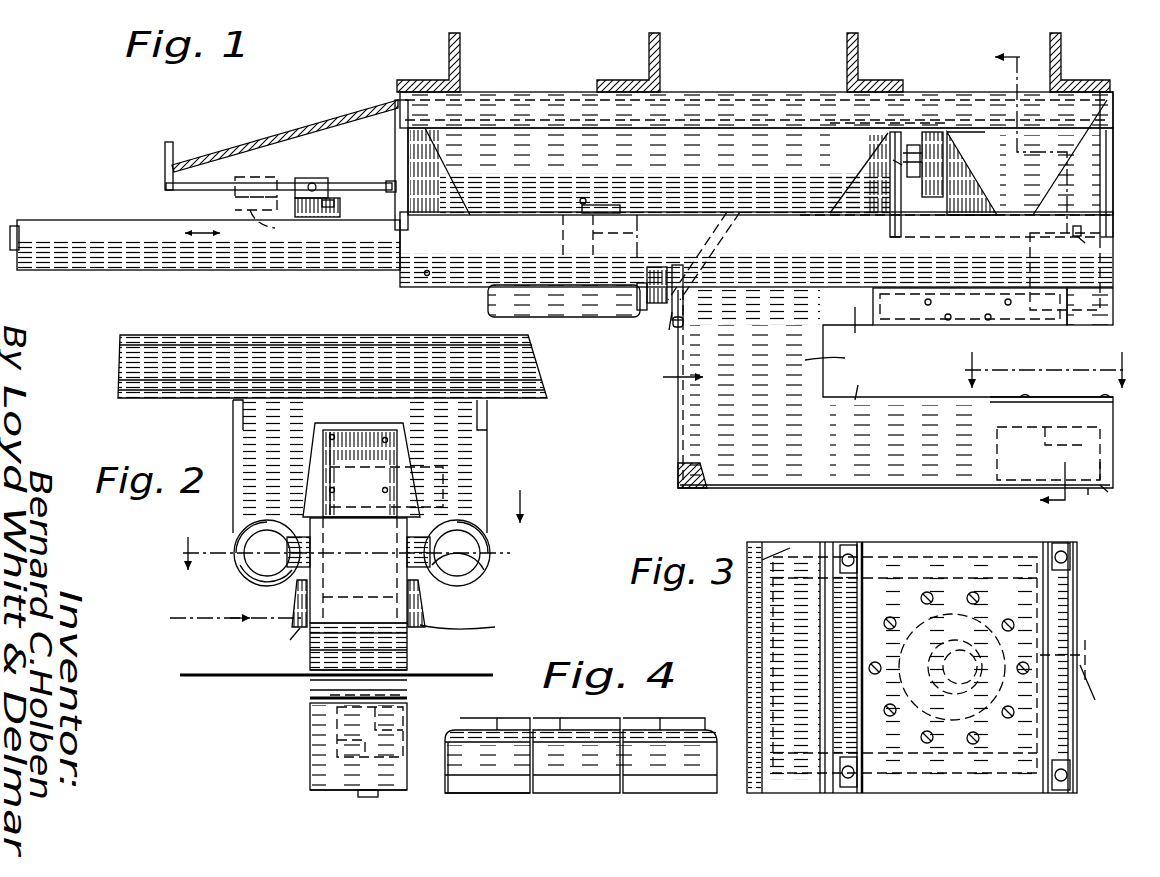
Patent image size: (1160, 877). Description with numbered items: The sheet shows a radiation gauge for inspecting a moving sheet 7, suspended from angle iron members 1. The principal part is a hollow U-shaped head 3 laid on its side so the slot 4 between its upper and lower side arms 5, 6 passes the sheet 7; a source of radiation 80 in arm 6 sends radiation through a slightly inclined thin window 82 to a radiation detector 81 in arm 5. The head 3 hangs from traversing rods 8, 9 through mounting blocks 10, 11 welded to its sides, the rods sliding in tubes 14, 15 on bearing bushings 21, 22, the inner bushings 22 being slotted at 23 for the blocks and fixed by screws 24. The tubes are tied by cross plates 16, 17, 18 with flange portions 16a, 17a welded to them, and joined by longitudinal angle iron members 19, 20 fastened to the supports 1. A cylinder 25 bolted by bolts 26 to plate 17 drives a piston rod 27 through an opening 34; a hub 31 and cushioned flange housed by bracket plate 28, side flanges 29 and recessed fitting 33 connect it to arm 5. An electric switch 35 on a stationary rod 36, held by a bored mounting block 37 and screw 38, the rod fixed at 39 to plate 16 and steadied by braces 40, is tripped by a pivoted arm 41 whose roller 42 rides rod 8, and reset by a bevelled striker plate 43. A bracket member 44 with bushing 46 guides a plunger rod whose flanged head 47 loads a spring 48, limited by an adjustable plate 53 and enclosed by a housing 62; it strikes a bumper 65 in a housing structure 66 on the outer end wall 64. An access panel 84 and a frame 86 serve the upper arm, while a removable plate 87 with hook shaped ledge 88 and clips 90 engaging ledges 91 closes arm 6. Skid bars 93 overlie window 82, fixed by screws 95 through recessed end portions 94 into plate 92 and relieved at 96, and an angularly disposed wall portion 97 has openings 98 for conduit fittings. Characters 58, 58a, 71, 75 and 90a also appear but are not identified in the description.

In FIG. 1, the angle iron members 1 is at (1081, 50).
In FIG. 2, the angle iron members 1 is at (318, 330).
In FIG. 1, the U-shaped frame or head 3 is at (894, 370).
In FIG. 2, the U-shaped frame or head 3 is at (400, 655).
In FIG. 3, the U-shaped frame or head 3 is at (776, 536).
In FIG. 1, the slot 4 is at (813, 360).
In FIG. 2, the slot 4 is at (407, 640).
In FIG. 1, the upper side arm 5 is at (854, 330).
In FIG. 2, the upper side arm 5 is at (358, 570).
In FIG. 1, the lower side arm 6 is at (852, 385).
In FIG. 2, the lower side arm 6 is at (330, 760).
In FIG. 3, the lower side arm 6 is at (748, 625).
In FIG. 4, the lower side arm 6 is at (447, 790).
In FIG. 1, the sheet 7 is at (1030, 277).
In FIG. 2, the sheet 7 is at (215, 690).
In FIG. 1, the traversing rod 8 is at (270, 260).
In FIG. 2, the traversing rod 8 is at (245, 563).
In FIG. 2, the traversing rod 9 is at (480, 568).
In FIG. 1, the mounting block 10 is at (1032, 193).
In FIG. 2, the mounting block 10 is at (310, 543).
In FIG. 2, the mounting block 11 is at (407, 543).
In FIG. 1, the tube 14 is at (470, 275).
In FIG. 2, the tube 14 is at (252, 580).
In FIG. 2, the tube 15 is at (484, 568).
In FIG. 1, the cross plate 16 is at (395, 128).
In FIG. 1, the flange portion 16a is at (1050, 170).
In FIG. 1, the cross plate 17 is at (890, 232).
In FIG. 2, the cross plate 17 is at (310, 480).
In FIG. 1, the flange portion 17a is at (830, 178).
In FIG. 1, the cross plate 18 is at (1113, 185).
In FIG. 2, the cross plate 18 is at (470, 457).
In FIG. 1, the angle iron member 19 is at (740, 95).
In FIG. 2, the angle iron member 19 is at (233, 418).
In FIG. 2, the angle iron member 20 is at (487, 418).
In FIG. 1, the bearing bushing 21 is at (1087, 245).
In FIG. 2, the bearing bushing 22 is at (505, 608).
In FIG. 2, the slot 23 is at (445, 605).
In FIG. 1, the screws 24 is at (427, 276).
In FIG. 1, the cylinder 25 is at (760, 171).
In FIG. 1, the bolts 26 is at (860, 150).
In FIG. 1, the piston rod 27 is at (912, 145).
In FIG. 1, the bracket plate 28 is at (950, 132).
In FIG. 2, the bracket plate 28 is at (360, 473).
In FIG. 1, the side flanges 29 is at (965, 170).
In FIG. 2, the side flanges 29 is at (397, 447).
In FIG. 1, the hub 31 is at (918, 158).
In FIG. 1, the recessed fitting 33 is at (940, 185).
In FIG. 1, the opening 34 is at (900, 180).
In FIG. 1, the electric switch 35 is at (267, 210).
In FIG. 1, the stationary rod 36 is at (352, 184).
In FIG. 1, the mounting block 37 is at (298, 178).
In FIG. 1, the screw 38 is at (312, 183).
In FIG. 1, the fixed rod mounting 39 is at (392, 193).
In FIG. 1, the braces 40 is at (240, 148).
In FIG. 1, the pivoted arm 41 is at (330, 208).
In FIG. 1, the roller 42 is at (315, 217).
In FIG. 1, the bevelled striker plate 43 is at (16, 224).
In FIG. 1, the bracket member 44 is at (640, 228).
In FIG. 1, the bushing 46 is at (640, 312).
In FIG. 1, the flanged head 47 is at (665, 303).
In FIG. 1, the spring 48 is at (660, 266).
In FIG. 1, the plate 53 is at (600, 236).
In FIG. 1, the stop 58 is at (563, 221).
In FIG. 1, the stop screw 58a is at (583, 198).
In FIG. 1, the housing 62 is at (560, 312).
In FIG. 1, the outer end wall 64 is at (678, 445).
In FIG. 1, the bumper 65 is at (660, 333).
In FIG. 1, the housing structure 66 is at (683, 323).
In FIG. 1, the bolt holes 71 is at (931, 302).
In FIG. 3, the bolt holes 71 is at (949, 668).
In FIG. 1, the bearing block 75 is at (905, 312).
In FIG. 2, the bearing block 75 is at (393, 637).
In FIG. 1, the source of radiation 80 is at (1038, 447).
In FIG. 2, the source of radiation 80 is at (337, 722).
In FIG. 3, the source of radiation 80 is at (920, 632).
In FIG. 1, the radiation detector 81 is at (1030, 255).
In FIG. 2, the radiation detector 81 is at (358, 642).
In FIG. 3, the window 82 is at (912, 653).
In FIG. 4, the window 82 is at (712, 735).
In FIG. 2, the access panel 84 is at (358, 512).
In FIG. 1, the frame 86 is at (1095, 325).
In FIG. 2, the frame 86 is at (358, 640).
In FIG. 1, the removable plate 87 is at (945, 490).
In FIG. 2, the removable plate 87 is at (310, 788).
In FIG. 1, the hook shaped ledge 88 is at (700, 466).
In FIG. 1, the clips 90 is at (1086, 468).
In FIG. 1, the nut 90a is at (1096, 505).
In FIG. 2, the nut 90a is at (385, 800).
In FIG. 1, the supporting ledges 91 is at (1117, 498).
In FIG. 1, the plate 92 is at (1003, 397).
In FIG. 2, the plate 92 is at (310, 700).
In FIG. 4, the plate 92 is at (445, 758).
In FIG. 1, the skid bars 93 is at (1030, 395).
In FIG. 2, the skid bars 93 is at (310, 686).
In FIG. 3, the skid bars 93 is at (1015, 740).
In FIG. 4, the skid bars 93 is at (665, 707).
In FIG. 3, the recessed end portions 94 is at (1062, 800).
In FIG. 4, the recessed end portions 94 is at (695, 710).
In FIG. 3, the screws 95 is at (1030, 800).
In FIG. 4, the screws 95 is at (515, 712).
In FIG. 2, the recess 96 is at (365, 688).
In FIG. 3, the recess 96 is at (1077, 679).
In FIG. 4, the recess 96 is at (600, 710).
In FIG. 1, the angularly disposed wall portion 97 is at (715, 240).
In FIG. 1, the openings 98 is at (722, 243).